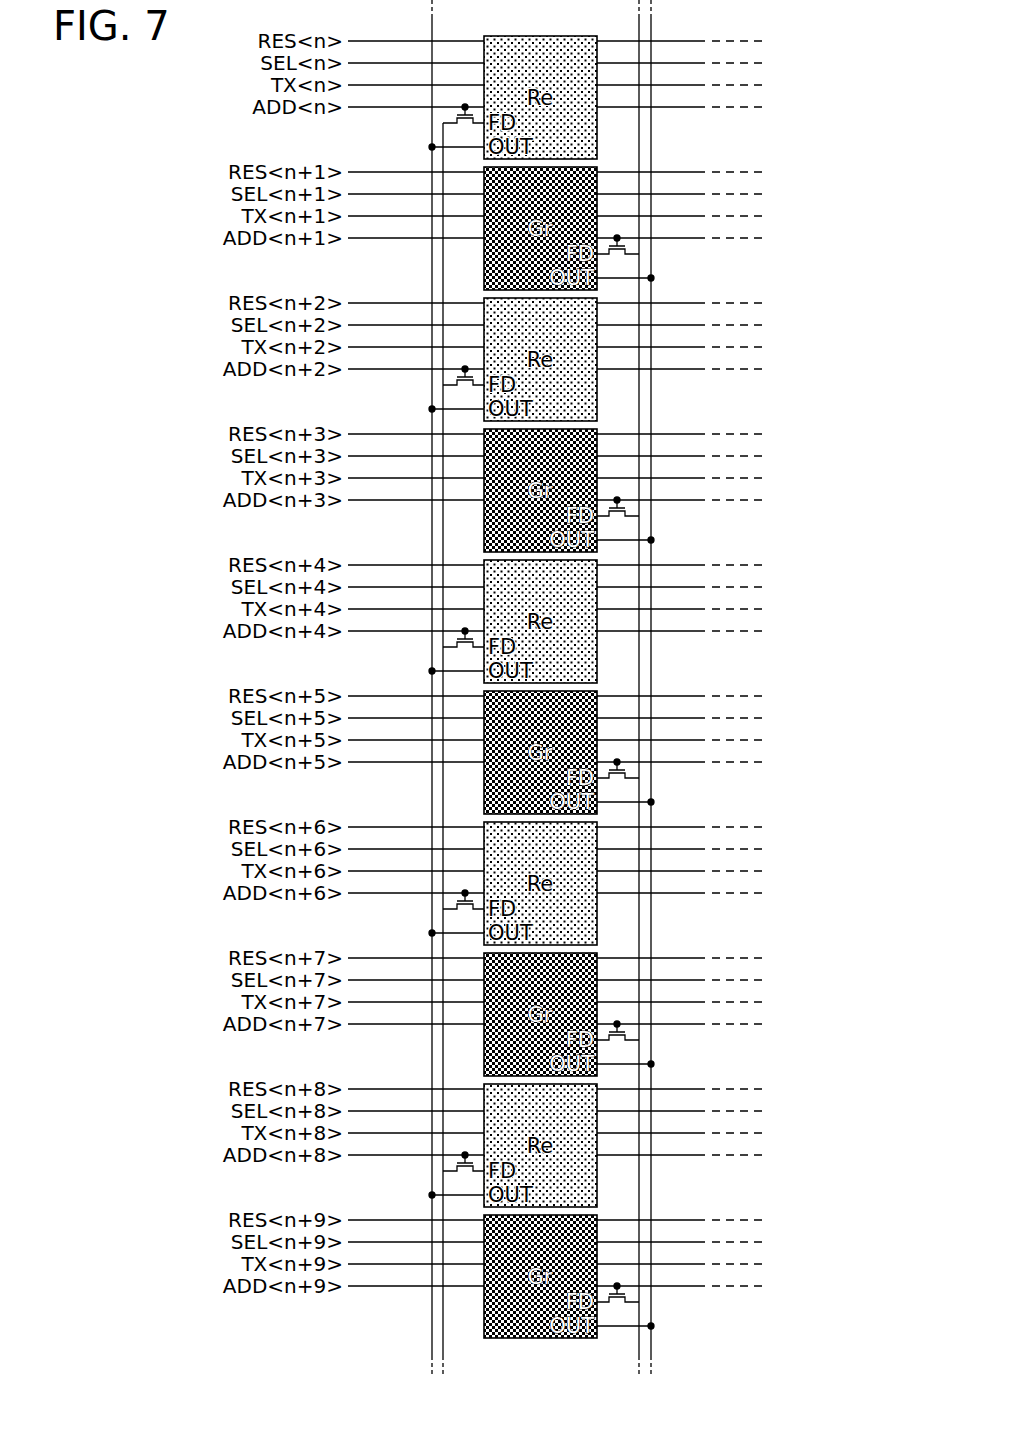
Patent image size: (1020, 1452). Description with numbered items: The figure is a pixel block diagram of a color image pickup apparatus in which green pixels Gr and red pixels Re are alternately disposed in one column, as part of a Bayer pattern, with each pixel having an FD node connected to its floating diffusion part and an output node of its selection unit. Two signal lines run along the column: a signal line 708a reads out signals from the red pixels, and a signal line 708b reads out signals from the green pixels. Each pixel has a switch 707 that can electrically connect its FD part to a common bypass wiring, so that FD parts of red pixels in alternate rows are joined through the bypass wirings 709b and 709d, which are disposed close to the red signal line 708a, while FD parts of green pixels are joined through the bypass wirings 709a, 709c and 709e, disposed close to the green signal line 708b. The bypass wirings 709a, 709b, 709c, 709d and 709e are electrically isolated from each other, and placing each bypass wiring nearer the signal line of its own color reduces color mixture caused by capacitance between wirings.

The switch 707 is at (462, 130).
The signal line 708a is at (432, 793).
The signal line 708b is at (652, 675).
The bypass wiring 709a is at (640, 132).
The bypass wiring 709b is at (443, 265).
The bypass wiring 709c is at (639, 649).
The bypass wiring 709d is at (443, 1056).
The bypass wiring 709e is at (640, 1344).